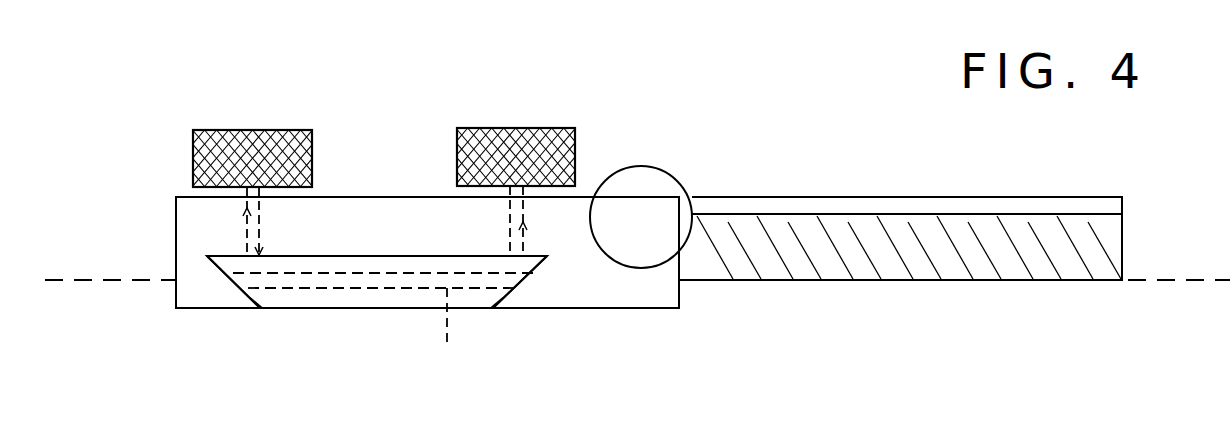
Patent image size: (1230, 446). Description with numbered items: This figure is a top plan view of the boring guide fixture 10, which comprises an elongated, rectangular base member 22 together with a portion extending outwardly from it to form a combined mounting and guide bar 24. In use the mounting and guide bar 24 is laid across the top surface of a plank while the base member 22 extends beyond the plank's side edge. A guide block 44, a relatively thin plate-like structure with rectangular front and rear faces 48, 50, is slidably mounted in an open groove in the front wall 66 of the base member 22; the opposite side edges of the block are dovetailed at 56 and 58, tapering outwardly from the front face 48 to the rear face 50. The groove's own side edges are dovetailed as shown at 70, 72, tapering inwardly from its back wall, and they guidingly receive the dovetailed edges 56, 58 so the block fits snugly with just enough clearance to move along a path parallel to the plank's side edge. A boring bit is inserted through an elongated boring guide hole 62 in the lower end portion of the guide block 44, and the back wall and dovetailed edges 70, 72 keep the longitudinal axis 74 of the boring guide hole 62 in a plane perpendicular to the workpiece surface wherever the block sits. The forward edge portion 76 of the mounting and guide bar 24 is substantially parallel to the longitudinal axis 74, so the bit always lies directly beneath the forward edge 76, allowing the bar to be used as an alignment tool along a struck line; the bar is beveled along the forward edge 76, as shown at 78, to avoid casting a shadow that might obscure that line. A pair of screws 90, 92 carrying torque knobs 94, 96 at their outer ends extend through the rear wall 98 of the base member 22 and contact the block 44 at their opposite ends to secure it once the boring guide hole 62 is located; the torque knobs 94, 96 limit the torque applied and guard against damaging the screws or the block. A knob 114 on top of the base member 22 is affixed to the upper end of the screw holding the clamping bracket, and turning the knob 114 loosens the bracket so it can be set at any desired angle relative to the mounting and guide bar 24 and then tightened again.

The boring guide fixture 10 is at (612, 135).
The base member 22 is at (171, 243).
The mounting and guide bar 24 is at (900, 241).
The guide block 44 is at (340, 279).
The front face 48 is at (402, 309).
The rear face 50 is at (358, 256).
The dovetailed portion 56 is at (245, 309).
The dovetailed portion 58 is at (510, 309).
The boring guide hole 62 is at (447, 332).
The front wall 66 is at (615, 309).
The dovetailed edge 70 is at (235, 280).
The dovetailed edge 72 is at (515, 287).
The longitudinal axis 74 is at (123, 282).
The forward edge portion 76 is at (802, 281).
The bevel 78 is at (970, 250).
The screw 90 is at (242, 220).
The screw 92 is at (528, 222).
The torque knob 94 is at (193, 147).
The torque knob 96 is at (493, 128).
The rear wall 98 is at (358, 196).
The knob 114 is at (675, 190).